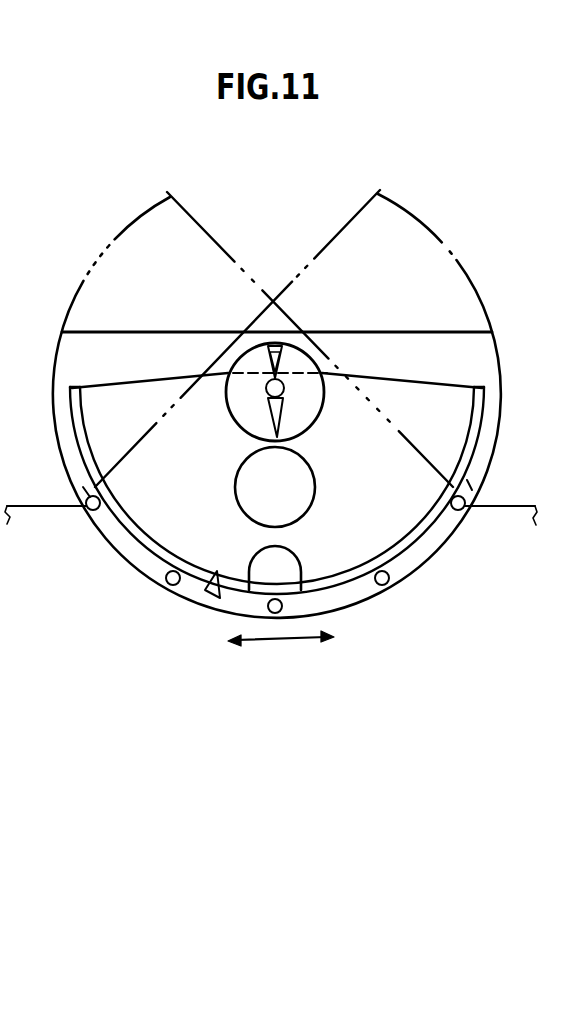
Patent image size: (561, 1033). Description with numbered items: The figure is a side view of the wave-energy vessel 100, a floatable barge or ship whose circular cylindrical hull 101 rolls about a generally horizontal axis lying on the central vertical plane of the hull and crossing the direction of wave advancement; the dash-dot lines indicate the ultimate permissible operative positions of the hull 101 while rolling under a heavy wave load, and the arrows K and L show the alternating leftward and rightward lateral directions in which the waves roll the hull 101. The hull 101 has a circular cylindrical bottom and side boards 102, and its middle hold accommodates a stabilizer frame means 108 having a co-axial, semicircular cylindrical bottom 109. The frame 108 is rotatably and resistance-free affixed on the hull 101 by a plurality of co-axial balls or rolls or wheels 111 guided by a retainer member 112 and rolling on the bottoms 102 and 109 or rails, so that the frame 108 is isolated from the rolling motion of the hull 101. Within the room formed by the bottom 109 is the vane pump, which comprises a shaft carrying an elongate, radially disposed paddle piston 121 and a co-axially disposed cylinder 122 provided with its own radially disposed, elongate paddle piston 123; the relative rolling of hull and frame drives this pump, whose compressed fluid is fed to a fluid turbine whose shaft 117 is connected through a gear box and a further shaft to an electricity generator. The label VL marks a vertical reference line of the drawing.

The vessel 100 is at (533, 163).
The hull 101 is at (493, 332).
The side boards 102 is at (143, 573).
The stabilizer frame means 108 is at (501, 396).
The semicircular cylindrical bottom 109 is at (212, 594).
The balls or rolls or wheels 111 is at (463, 522).
The retainer member 112 is at (342, 608).
The turbine shaft 117 is at (308, 348).
The paddle piston 121 is at (325, 380).
The cylinder 122 is at (284, 388).
The paddle piston 123 is at (300, 345).
The vertical reference line VL is at (33, 505).
The arrow K is at (276, 656).
The arrow L is at (326, 665).